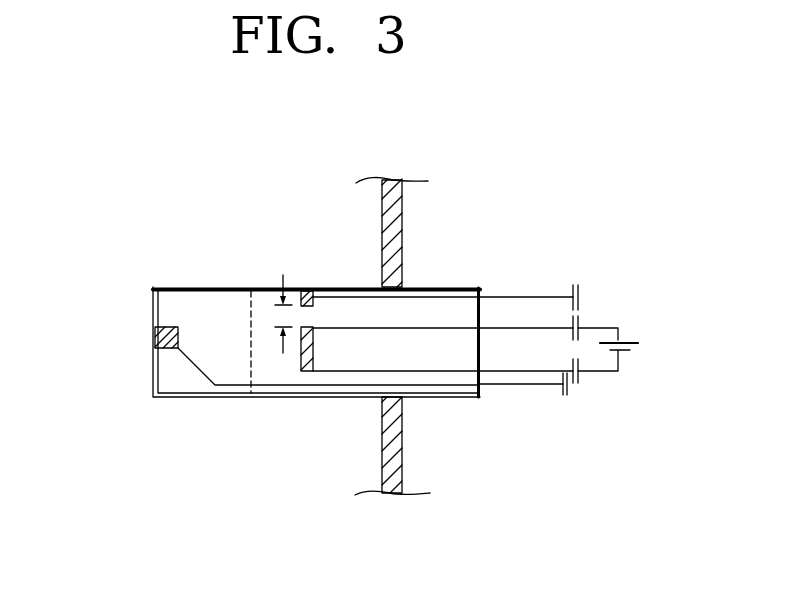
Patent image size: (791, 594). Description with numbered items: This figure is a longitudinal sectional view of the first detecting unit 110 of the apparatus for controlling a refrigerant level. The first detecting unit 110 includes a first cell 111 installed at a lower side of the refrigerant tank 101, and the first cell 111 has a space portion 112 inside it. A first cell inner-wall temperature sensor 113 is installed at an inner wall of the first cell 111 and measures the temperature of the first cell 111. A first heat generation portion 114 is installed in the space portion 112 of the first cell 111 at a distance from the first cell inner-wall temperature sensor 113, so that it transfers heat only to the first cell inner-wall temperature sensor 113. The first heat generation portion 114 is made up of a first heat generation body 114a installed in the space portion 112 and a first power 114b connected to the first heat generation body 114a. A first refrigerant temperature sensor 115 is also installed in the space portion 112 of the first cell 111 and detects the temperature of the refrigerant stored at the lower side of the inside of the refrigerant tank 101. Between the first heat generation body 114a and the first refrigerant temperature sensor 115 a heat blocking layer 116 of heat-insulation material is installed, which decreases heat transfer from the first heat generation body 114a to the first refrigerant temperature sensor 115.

The refrigerant tank 101 is at (405, 208).
The first detecting unit 110 is at (133, 272).
The first cell 111 is at (227, 288).
The space portion 112 is at (197, 305).
The first cell inner-wall temperature sensor 113 is at (305, 291).
The first heat generation portion 114 is at (480, 419).
The first heat generation body 114a is at (313, 345).
The first power 114b is at (627, 353).
The first refrigerant temperature sensor 115 is at (155, 337).
The heat blocking layer 116 is at (252, 368).